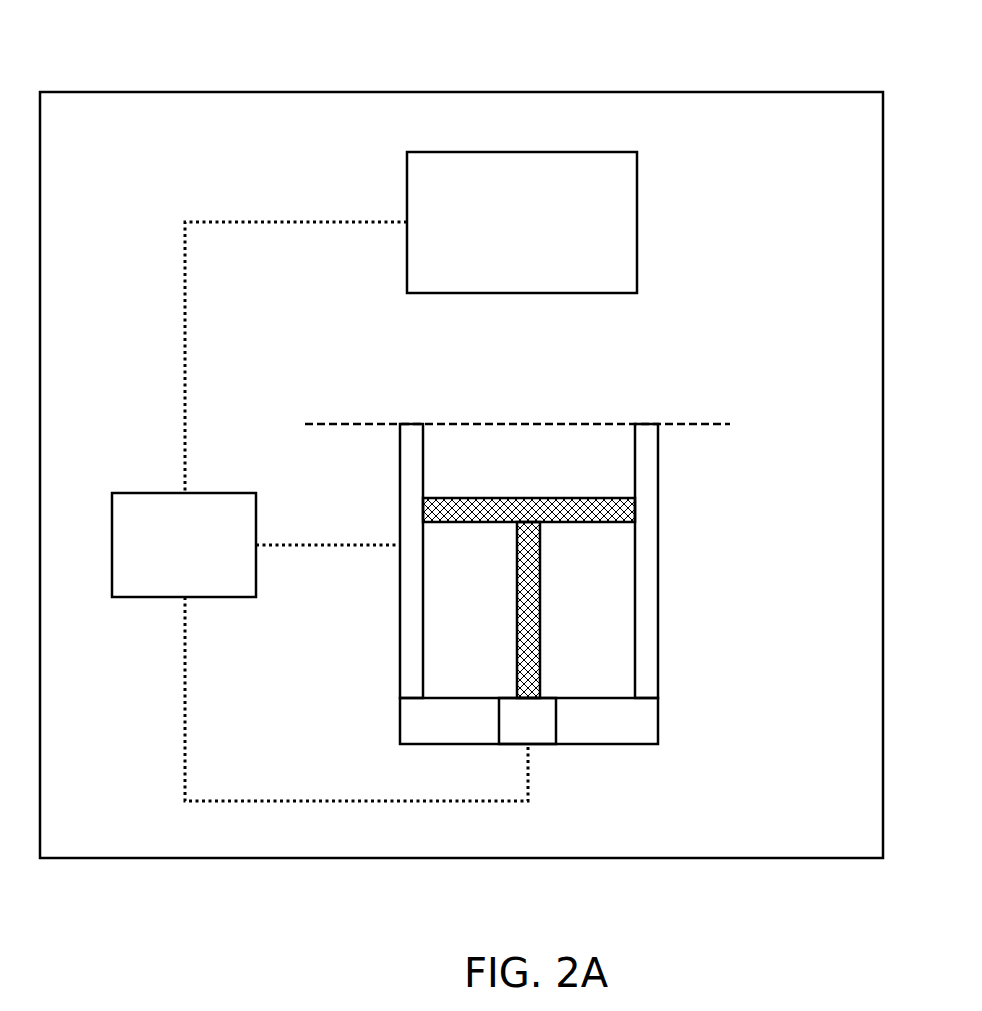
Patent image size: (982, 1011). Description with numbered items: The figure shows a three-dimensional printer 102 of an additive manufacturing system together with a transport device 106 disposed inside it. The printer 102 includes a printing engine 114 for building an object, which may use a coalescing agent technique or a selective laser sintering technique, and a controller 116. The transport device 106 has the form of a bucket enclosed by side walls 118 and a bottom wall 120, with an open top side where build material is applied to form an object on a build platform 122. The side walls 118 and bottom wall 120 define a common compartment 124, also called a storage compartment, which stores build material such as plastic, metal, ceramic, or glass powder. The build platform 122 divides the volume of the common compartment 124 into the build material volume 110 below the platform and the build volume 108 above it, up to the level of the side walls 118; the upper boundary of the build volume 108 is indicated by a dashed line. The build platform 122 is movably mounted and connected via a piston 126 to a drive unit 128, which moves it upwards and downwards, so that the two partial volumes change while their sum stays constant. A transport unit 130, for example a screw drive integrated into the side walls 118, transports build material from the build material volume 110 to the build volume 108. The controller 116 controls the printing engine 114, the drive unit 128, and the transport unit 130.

The 3D printer 102 is at (461, 92).
The transport device 106 is at (676, 460).
The build volume 108 is at (508, 476).
The build material volume 110 is at (443, 623).
The 3D printing engine 114 is at (500, 256).
The controller 116 is at (162, 579).
The side walls 118 is at (658, 558).
The bottom wall 120 is at (628, 744).
The build platform 122 is at (620, 508).
The common compartment 124 is at (622, 645).
The piston 126 is at (540, 608).
The drive unit 128 is at (506, 736).
The transport unit 130 is at (404, 596).